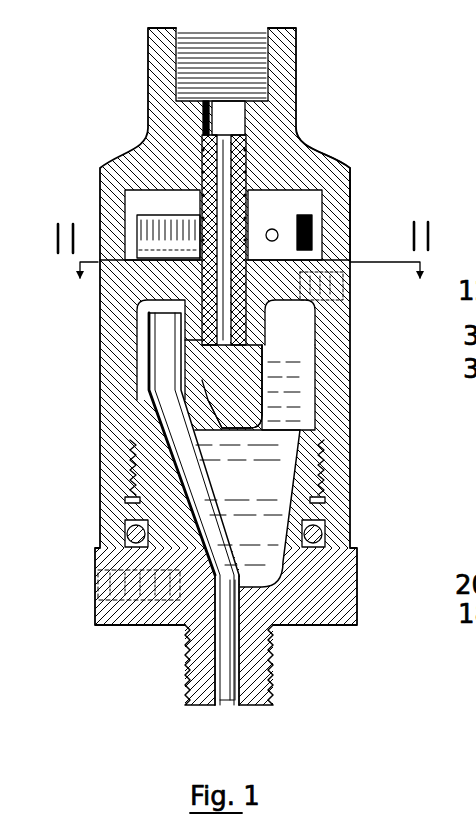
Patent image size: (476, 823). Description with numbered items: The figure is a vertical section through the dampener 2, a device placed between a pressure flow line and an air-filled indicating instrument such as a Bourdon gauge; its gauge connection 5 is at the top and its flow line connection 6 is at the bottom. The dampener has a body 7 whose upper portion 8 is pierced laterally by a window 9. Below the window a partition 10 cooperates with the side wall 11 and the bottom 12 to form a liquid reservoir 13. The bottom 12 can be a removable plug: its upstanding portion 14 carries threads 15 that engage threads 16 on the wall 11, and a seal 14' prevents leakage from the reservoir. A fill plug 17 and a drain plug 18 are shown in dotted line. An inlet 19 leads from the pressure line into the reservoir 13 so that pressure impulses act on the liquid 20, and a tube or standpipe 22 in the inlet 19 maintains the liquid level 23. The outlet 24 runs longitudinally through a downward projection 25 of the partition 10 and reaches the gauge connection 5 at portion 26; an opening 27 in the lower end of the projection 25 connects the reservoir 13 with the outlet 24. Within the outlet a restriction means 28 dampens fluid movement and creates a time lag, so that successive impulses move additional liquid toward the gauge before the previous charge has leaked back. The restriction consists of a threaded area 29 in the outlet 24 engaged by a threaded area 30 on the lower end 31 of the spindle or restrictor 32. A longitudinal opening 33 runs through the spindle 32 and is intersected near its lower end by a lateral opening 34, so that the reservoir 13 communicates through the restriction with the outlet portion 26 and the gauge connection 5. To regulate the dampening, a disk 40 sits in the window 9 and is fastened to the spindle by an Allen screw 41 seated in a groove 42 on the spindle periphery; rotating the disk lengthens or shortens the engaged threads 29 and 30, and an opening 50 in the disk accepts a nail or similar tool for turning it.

The dampener 2 is at (98, 166).
The gauge connection 5 is at (277, 66).
The flow line connection 6 is at (258, 688).
The body 7 is at (351, 191).
The upper portion 8 is at (378, 199).
The window 9 is at (333, 188).
The partition 10 is at (274, 284).
The side wall 11 is at (335, 402).
The bottom 12 is at (267, 588).
The liquid reservoir 13 is at (243, 355).
The upstanding portion 14 is at (247, 508).
The seal 14' is at (268, 525).
The threads 15 is at (317, 473).
The threads 16 is at (330, 451).
The fill plug 17 is at (345, 291).
The drain plug 18 is at (98, 598).
The inlet 19 is at (223, 697).
The liquid 20 is at (318, 376).
The tube or standpipe 22 is at (183, 458).
The liquid level 23 is at (207, 352).
The outlet 24 is at (206, 412).
The downward projection 25 is at (292, 420).
The outlet portion 26 is at (218, 117).
The opening 27 is at (230, 430).
The restriction means 28 is at (312, 396).
The threaded area 29 is at (215, 392).
The threaded area 30 is at (266, 402).
The lower end of spindle 31 is at (252, 392).
The spindle or restrictor 32 is at (205, 283).
The longitudinal opening 33 is at (237, 137).
The lateral opening 34 is at (207, 340).
The disk 40 is at (313, 240).
The Allen screw 41 is at (137, 233).
The groove 42 is at (244, 210).
The opening 50 is at (277, 232).